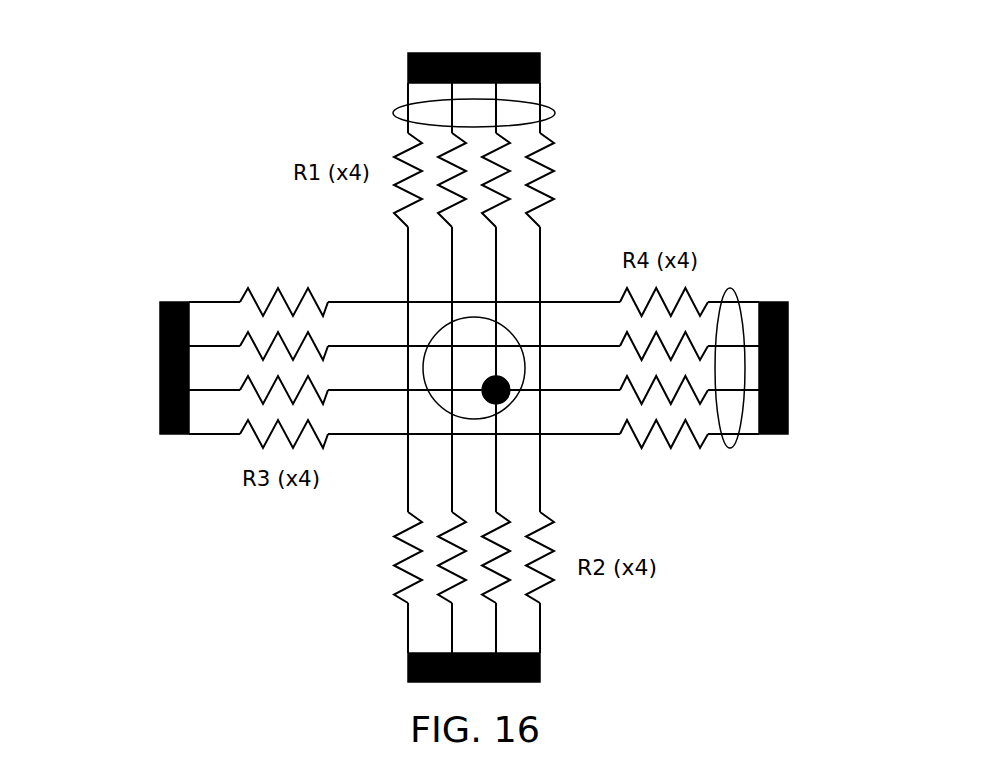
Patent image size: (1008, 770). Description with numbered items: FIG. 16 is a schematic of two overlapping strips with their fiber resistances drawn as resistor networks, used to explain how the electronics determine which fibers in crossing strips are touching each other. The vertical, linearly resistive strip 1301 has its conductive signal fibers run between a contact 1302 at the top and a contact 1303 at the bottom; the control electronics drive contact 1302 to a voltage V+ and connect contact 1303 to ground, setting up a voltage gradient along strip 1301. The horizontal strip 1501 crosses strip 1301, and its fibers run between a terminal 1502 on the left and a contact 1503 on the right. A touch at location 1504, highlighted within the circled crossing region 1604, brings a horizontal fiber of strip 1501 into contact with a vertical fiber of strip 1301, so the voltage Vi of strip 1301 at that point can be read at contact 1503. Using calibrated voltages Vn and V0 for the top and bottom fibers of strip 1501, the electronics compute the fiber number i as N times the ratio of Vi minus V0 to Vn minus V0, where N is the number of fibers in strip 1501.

The contact 1302 is at (540, 53).
The contact 1303 is at (540, 682).
The left electrode terminal 1502 is at (160, 302).
The contact 1503 is at (788, 302).
The linearly resistive strip 1301 is at (555, 113).
The strip 1501 is at (730, 288).
The central node region 1604 is at (437, 330).
The touch location 1504 is at (506, 400).